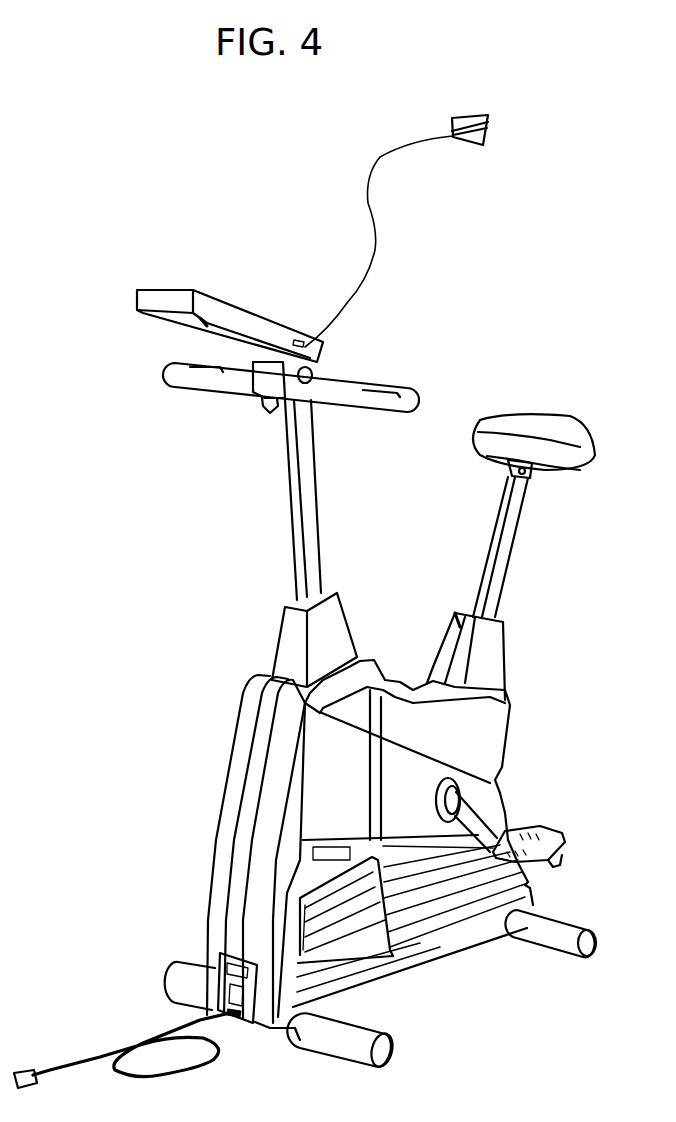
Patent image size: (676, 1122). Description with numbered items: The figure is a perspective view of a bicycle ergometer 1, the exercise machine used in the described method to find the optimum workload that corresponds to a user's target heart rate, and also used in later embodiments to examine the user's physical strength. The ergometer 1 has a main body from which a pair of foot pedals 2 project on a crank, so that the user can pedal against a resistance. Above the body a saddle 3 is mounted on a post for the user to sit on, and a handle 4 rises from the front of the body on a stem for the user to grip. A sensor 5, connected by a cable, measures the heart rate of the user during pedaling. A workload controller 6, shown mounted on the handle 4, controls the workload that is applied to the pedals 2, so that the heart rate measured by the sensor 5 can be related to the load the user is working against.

The bicycle ergometer 1 is at (327, 788).
The foot pedals 2 is at (533, 830).
The saddle 3 is at (580, 424).
The handle 4 is at (330, 384).
The sensor 5 is at (478, 112).
The workload controller 6 is at (254, 322).